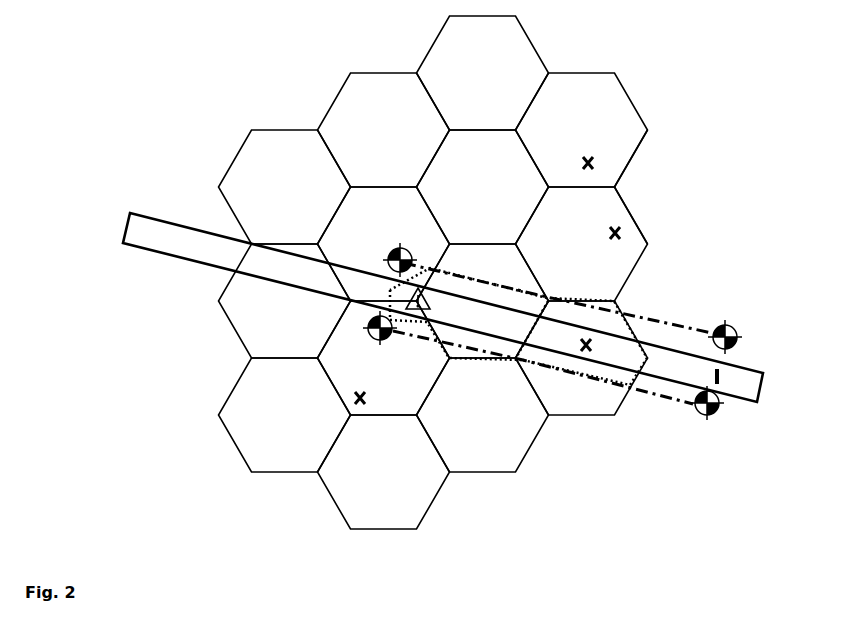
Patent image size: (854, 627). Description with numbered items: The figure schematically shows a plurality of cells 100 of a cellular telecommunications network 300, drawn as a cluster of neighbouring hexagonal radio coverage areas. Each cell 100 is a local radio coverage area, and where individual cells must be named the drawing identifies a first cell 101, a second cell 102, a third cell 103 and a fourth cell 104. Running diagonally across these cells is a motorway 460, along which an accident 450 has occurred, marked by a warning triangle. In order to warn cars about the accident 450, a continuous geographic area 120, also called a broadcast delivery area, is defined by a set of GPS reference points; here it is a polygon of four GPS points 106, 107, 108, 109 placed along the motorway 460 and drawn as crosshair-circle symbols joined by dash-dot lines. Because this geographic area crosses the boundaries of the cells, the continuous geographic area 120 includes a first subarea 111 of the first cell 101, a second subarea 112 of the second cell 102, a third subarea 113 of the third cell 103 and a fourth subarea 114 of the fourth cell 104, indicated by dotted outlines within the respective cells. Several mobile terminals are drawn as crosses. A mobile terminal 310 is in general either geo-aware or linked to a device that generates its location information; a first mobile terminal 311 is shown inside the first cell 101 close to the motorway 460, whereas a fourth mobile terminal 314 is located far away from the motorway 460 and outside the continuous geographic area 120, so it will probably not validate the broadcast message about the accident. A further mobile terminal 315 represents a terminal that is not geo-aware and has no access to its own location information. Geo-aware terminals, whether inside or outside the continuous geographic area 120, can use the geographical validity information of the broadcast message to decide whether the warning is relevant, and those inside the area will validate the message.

The cellular telecommunications network 300 is at (676, 109).
The cell 100 is at (665, 187).
The first cell 101 is at (599, 410).
The second cell 102 is at (516, 270).
The third cell 103 is at (411, 243).
The fourth cell 104 is at (393, 366).
The GPS point 106 is at (734, 324).
The GPS point 107 is at (718, 416).
The GPS point 108 is at (366, 328).
The GPS point 109 is at (384, 256).
The first subarea 111 is at (629, 340).
The second subarea 112 is at (473, 281).
The third subarea 113 is at (420, 267).
The fourth subarea 114 is at (423, 340).
The continuous geographic area 120 is at (643, 398).
The mobile terminal 310 is at (630, 233).
The first mobile terminal 311 is at (598, 337).
The fourth mobile terminal 314 is at (373, 393).
The further mobile terminal 315 is at (604, 163).
The accident 450 is at (437, 301).
The motorway 460 is at (757, 389).